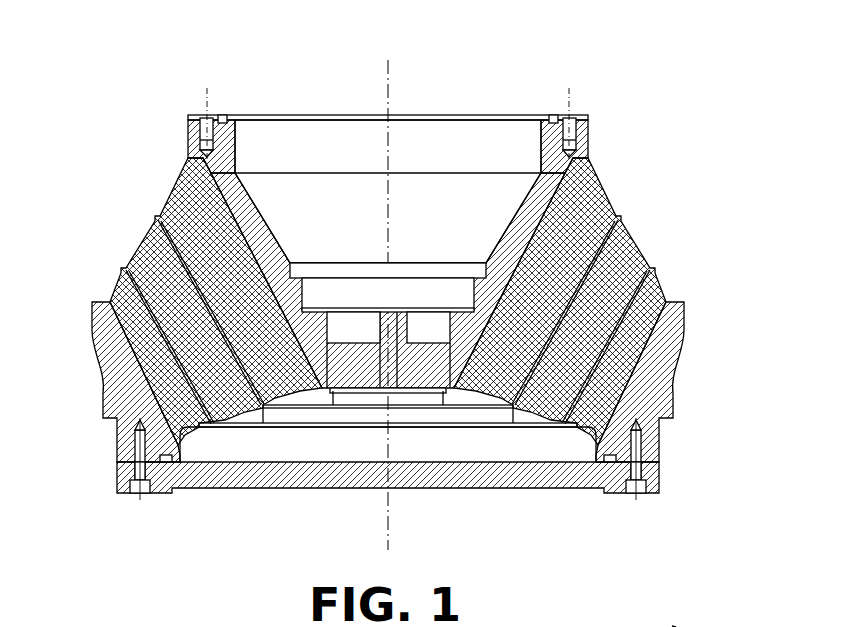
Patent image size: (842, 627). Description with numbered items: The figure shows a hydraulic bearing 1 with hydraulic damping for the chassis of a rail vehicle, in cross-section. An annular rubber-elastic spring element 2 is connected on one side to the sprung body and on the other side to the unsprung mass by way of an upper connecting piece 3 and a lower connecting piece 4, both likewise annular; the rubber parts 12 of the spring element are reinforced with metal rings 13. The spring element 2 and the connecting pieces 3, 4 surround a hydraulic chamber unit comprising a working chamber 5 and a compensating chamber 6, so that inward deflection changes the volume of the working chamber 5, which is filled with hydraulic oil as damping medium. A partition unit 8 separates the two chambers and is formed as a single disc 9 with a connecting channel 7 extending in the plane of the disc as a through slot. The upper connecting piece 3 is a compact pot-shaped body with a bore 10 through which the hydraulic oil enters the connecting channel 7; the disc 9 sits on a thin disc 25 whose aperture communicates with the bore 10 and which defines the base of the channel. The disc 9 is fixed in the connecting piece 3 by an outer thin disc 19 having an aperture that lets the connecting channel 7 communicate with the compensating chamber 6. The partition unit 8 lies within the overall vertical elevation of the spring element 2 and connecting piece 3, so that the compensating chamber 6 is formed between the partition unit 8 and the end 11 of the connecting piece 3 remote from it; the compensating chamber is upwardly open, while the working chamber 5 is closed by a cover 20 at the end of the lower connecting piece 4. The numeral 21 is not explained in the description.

The hydraulic bearing 1 is at (633, 113).
The spring element 2 is at (567, 370).
The upper connecting piece 3 is at (558, 167).
The lower connecting piece 4 is at (637, 407).
The working chamber 5 is at (518, 443).
The compensating chamber 6 is at (562, 212).
The connecting channel 7 is at (427, 330).
The partition unit 8 is at (443, 290).
The disc 9 is at (368, 327).
The bore 10 is at (415, 375).
The end of the connecting piece 11 is at (273, 105).
The rubber parts 12 is at (187, 322).
The metal rings 13 is at (180, 377).
The outer thin disc 19 is at (352, 308).
The cover 20 is at (262, 478).
The stop 21 is at (674, 626).
The thin disc 25 is at (345, 345).